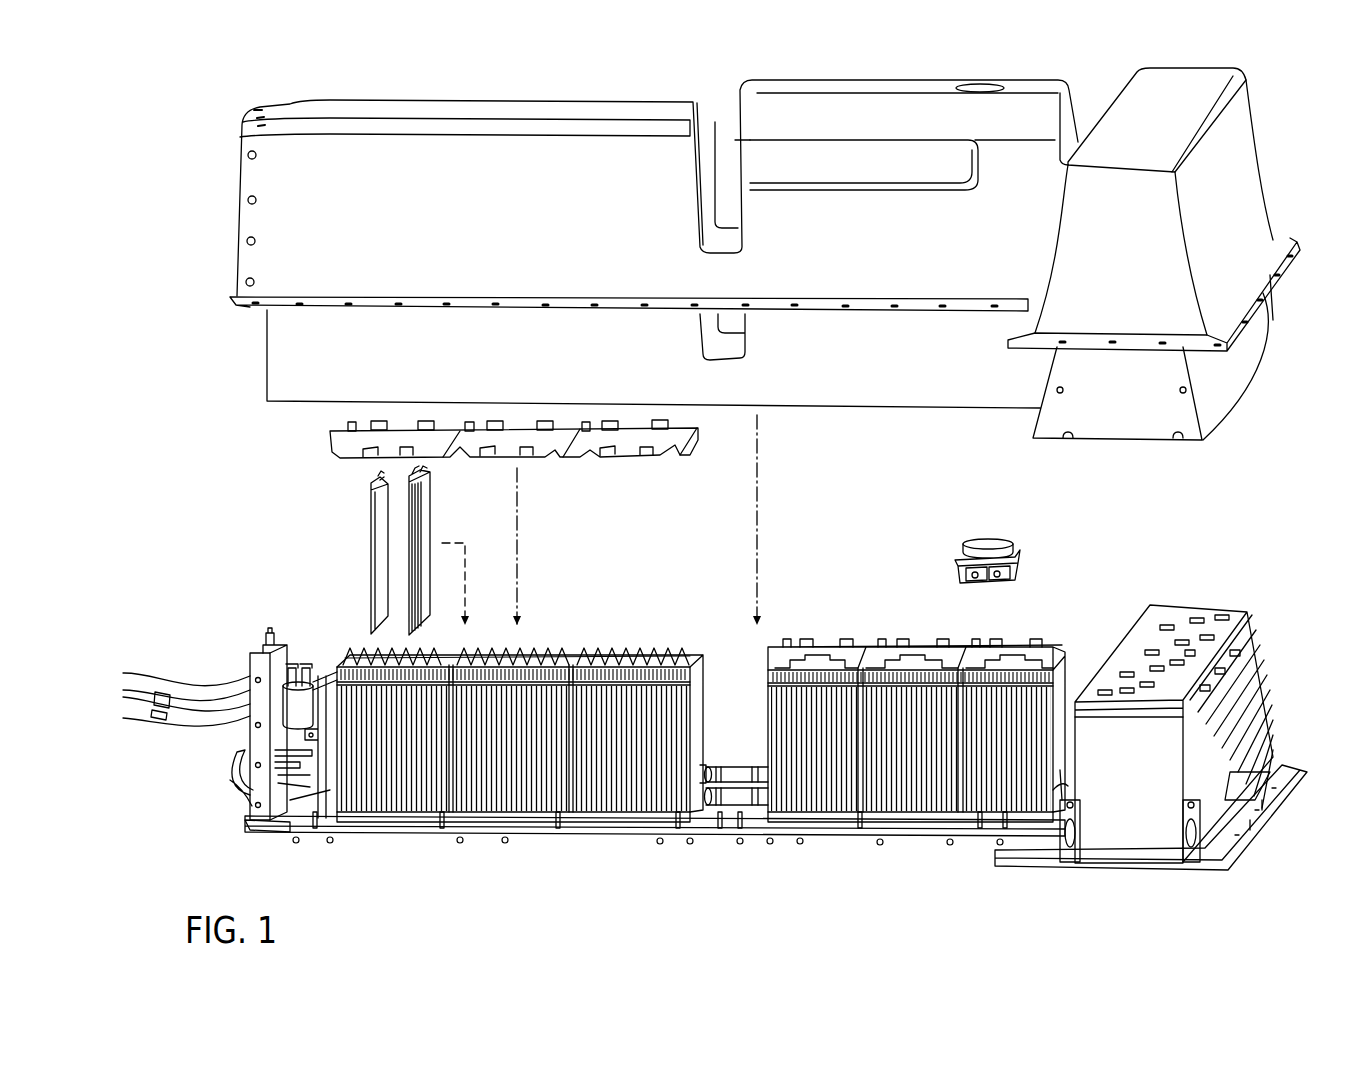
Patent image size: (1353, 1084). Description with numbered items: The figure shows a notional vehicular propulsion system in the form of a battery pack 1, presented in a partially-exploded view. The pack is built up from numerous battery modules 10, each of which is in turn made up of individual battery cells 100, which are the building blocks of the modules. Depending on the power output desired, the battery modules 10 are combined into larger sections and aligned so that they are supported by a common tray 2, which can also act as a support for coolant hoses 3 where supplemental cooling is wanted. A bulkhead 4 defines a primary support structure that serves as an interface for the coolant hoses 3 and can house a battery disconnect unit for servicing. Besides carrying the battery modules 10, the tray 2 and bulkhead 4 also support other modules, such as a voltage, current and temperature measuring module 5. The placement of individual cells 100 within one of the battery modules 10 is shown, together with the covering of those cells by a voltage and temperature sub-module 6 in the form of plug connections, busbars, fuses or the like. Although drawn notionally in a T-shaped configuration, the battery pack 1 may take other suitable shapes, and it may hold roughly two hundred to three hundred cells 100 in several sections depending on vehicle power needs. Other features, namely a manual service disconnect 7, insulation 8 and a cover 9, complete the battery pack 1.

The battery pack 1 is at (162, 133).
The tray 2 is at (972, 842).
The coolant hoses 3 is at (735, 770).
The bulkhead 4 is at (255, 815).
The voltage, current and temperature measuring module 5 is at (330, 752).
The voltage and temperature sub-module 6 is at (333, 452).
The manual service disconnect 7 is at (990, 538).
The insulation 8 is at (267, 362).
The cover 9 is at (240, 220).
The battery module 10 is at (550, 850).
The battery cell 100 is at (371, 561).